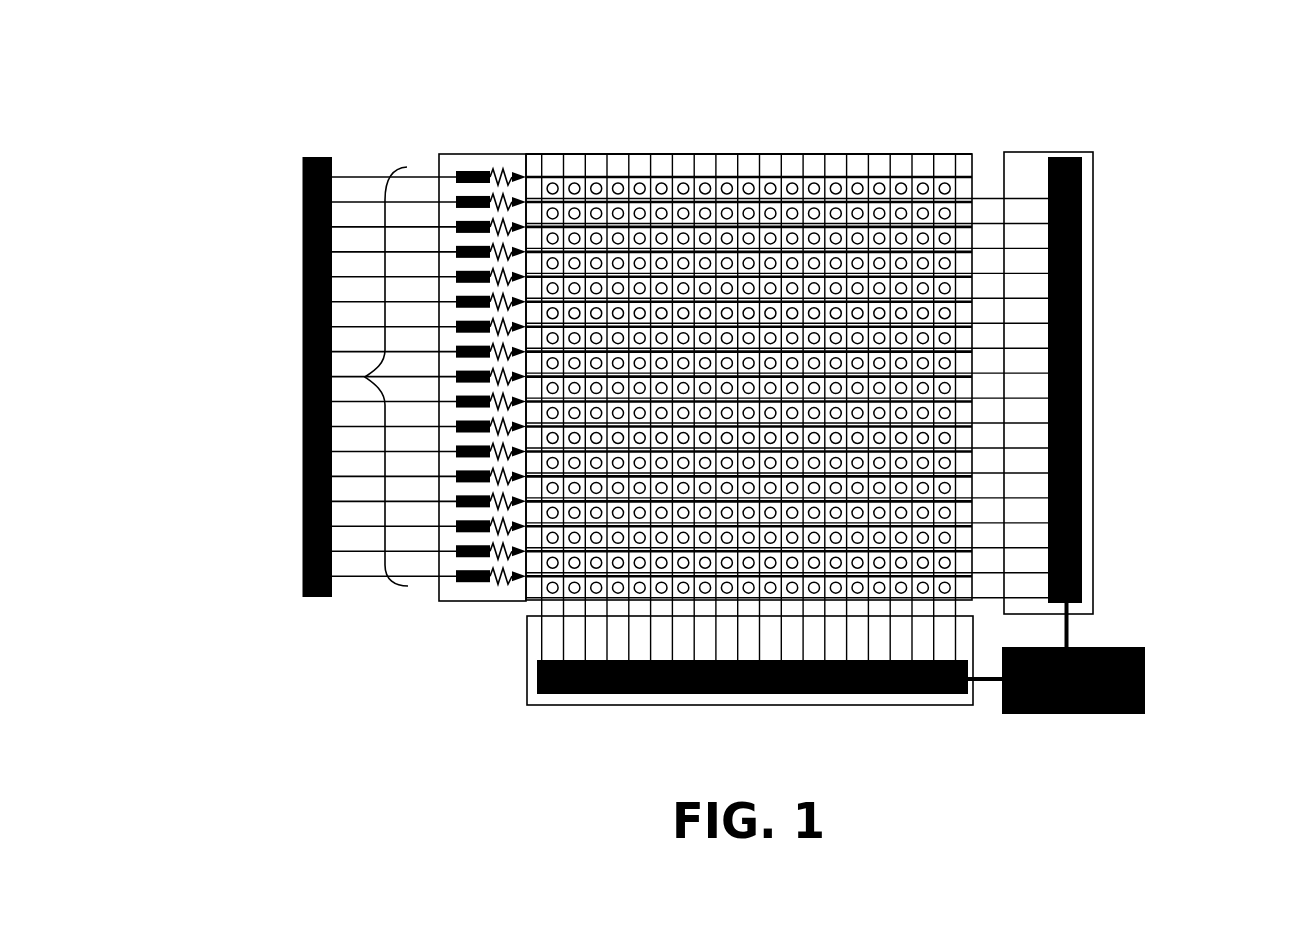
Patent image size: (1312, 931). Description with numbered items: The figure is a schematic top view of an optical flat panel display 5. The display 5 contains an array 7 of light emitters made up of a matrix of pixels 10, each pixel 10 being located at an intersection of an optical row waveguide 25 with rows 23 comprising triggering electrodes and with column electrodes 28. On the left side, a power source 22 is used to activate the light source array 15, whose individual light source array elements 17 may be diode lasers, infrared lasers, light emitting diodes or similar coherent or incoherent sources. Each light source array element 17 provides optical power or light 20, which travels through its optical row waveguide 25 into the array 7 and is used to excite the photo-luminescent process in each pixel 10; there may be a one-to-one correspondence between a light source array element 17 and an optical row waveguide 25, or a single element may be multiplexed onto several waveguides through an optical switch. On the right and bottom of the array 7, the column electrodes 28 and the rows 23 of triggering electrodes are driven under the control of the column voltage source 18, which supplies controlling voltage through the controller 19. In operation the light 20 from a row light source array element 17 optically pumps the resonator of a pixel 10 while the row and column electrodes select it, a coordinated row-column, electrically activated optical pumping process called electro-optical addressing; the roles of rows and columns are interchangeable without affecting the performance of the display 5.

The optical flat panel display 5 is at (835, 377).
The array of light emitters 7 is at (762, 140).
The pixel 10 is at (662, 186).
The light source array 15 is at (365, 377).
The light source array element 17 is at (458, 556).
The column voltage source 18 is at (1045, 714).
The controller 19 is at (652, 695).
The light 20 is at (493, 174).
The power source 22 is at (302, 273).
The rows 23 is at (988, 590).
The optical row waveguide 25 is at (535, 579).
The column electrode 28 is at (933, 167).